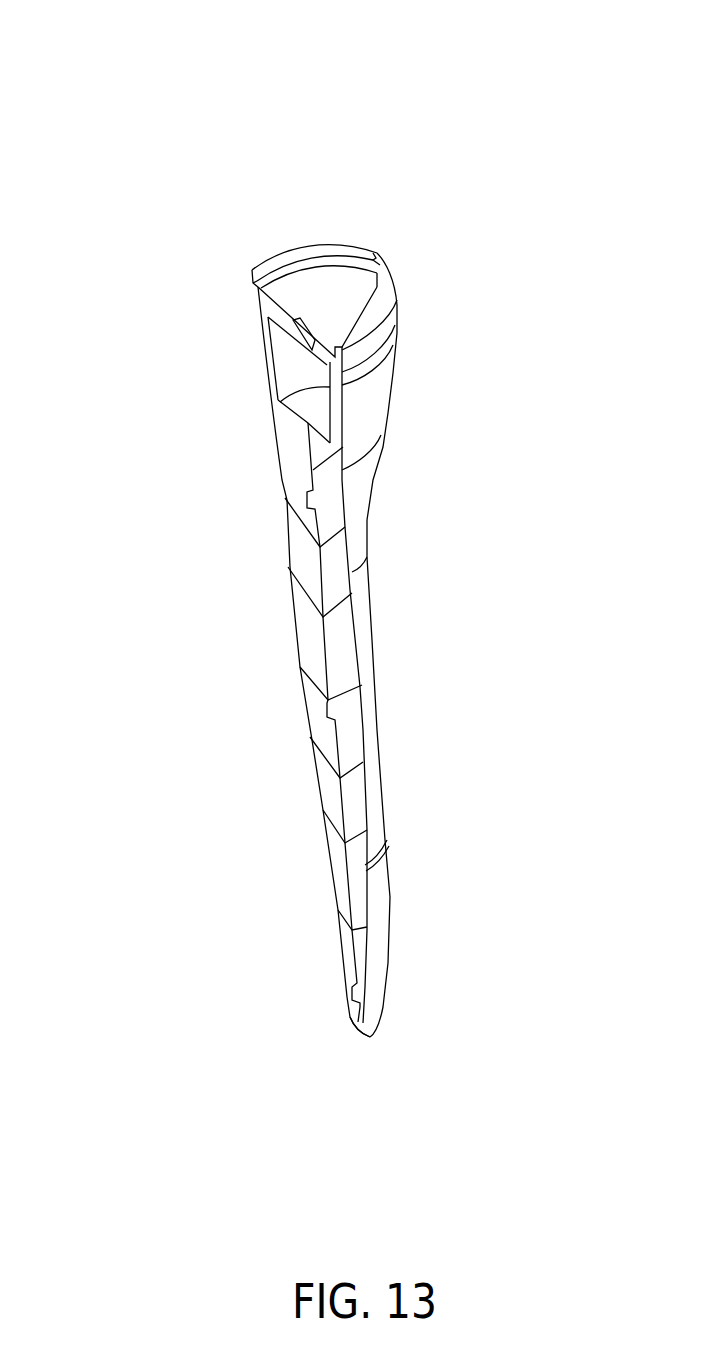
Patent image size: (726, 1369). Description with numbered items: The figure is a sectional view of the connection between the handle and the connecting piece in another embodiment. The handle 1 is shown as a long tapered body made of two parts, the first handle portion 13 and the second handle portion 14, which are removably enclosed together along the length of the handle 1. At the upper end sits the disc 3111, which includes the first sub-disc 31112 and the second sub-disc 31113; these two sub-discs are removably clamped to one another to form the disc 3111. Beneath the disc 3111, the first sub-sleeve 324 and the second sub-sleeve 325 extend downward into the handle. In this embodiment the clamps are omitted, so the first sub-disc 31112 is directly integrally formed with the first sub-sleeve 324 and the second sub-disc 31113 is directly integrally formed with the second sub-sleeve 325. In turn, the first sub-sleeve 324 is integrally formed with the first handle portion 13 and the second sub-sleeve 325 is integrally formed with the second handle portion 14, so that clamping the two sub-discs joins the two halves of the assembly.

The handle 1 is at (478, 1090).
The first handle portion 13 is at (350, 963).
The second handle portion 14 is at (358, 903).
The disc 3111 is at (587, 117).
The first sub-disc 31112 is at (303, 290).
The second sub-disc 31113 is at (348, 312).
The first sub-sleeve 324 is at (273, 381).
The second sub-sleeve 325 is at (335, 393).